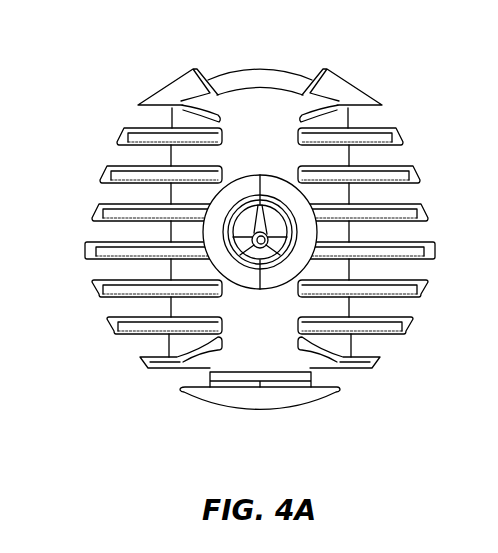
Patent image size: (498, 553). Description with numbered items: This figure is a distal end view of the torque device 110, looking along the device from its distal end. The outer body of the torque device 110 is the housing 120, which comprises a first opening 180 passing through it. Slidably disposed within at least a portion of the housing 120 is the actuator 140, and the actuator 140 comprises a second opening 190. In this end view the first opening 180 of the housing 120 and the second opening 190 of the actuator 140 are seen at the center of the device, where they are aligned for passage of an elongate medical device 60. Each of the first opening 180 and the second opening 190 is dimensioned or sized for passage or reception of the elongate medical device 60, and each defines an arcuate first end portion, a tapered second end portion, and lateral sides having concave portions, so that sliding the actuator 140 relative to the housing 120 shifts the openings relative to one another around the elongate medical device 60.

The torque device 110 is at (406, 108).
The actuator 140 is at (283, 78).
The housing 120 is at (281, 355).
The first opening 180 is at (250, 217).
The elongate medical device 60 is at (249, 243).
The second opening 190 is at (276, 257).